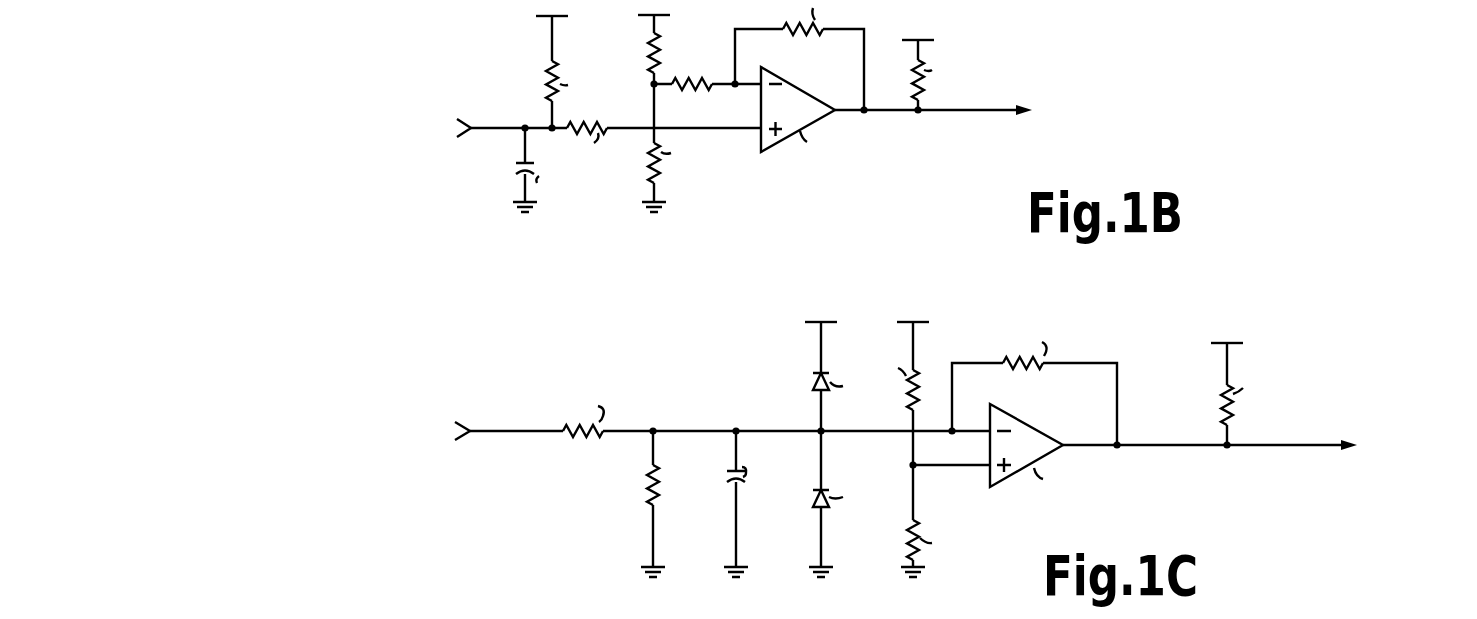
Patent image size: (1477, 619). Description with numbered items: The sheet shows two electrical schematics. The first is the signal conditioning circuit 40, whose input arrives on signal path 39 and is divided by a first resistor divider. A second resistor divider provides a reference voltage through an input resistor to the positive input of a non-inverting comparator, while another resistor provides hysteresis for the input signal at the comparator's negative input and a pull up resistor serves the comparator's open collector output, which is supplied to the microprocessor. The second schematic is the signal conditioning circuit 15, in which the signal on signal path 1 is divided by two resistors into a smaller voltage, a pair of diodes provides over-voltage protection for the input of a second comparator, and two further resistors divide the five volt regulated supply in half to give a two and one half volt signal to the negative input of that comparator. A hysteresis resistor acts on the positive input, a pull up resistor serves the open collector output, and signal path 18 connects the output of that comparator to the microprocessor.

In FIG. 1B, the signal path 39 is at (507, 118).
In FIG. 1B, the signal conditioning circuit 40 is at (632, 199).
In FIG. 1C, the signal path 1 is at (525, 416).
In FIG. 1C, the signal conditioning circuit 15 is at (617, 536).
In FIG. 1C, the signal path 18 is at (1267, 445).